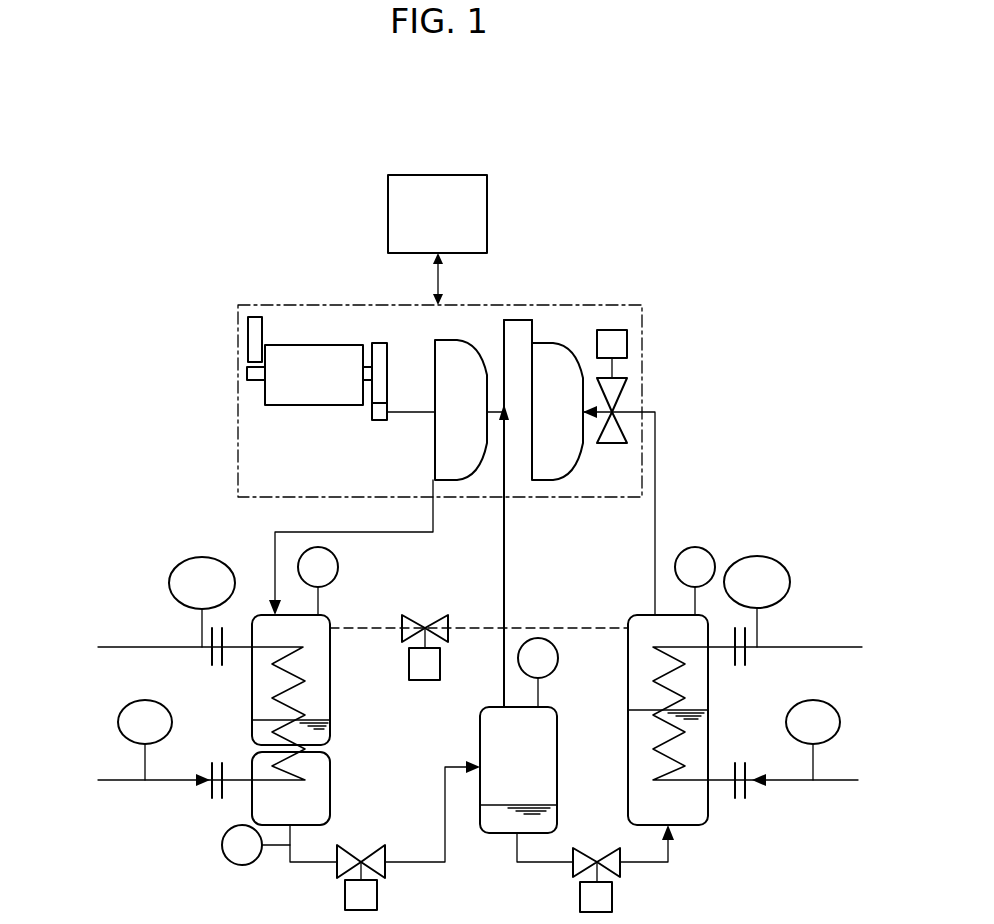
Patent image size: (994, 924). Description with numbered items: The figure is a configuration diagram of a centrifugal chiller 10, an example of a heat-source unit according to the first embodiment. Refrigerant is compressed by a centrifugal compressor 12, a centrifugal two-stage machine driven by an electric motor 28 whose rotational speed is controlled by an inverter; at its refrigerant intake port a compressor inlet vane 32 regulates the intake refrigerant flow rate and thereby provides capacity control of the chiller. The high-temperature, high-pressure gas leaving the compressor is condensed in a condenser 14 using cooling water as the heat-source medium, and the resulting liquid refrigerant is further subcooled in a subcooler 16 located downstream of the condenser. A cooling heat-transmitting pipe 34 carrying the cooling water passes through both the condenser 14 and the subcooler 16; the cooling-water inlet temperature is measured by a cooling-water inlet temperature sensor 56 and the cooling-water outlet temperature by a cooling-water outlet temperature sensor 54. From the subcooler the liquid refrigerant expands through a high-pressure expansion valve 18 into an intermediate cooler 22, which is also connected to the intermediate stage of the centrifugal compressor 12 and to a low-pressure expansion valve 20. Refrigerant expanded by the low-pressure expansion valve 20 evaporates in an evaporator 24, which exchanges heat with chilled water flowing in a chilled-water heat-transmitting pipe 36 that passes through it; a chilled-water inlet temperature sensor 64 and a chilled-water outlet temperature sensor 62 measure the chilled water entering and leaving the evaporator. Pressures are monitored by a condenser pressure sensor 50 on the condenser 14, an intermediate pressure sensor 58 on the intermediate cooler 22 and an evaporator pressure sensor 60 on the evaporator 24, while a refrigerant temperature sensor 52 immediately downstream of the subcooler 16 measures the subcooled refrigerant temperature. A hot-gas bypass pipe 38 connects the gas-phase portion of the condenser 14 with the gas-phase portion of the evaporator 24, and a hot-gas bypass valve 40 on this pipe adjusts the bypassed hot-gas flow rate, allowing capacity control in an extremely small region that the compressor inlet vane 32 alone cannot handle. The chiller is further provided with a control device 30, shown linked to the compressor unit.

The centrifugal chiller 10 is at (188, 182).
The centrifugal compressor 12 is at (668, 302).
The condenser 14 is at (262, 613).
The subcooler 16 is at (331, 780).
The high-pressure expansion valve 18 is at (386, 870).
The low-pressure expansion valve 20 is at (622, 870).
The intermediate cooler 22 is at (558, 755).
The evaporator 24 is at (636, 613).
The electric motor 28 is at (307, 345).
The control device 30 is at (437, 175).
The compressor inlet vane 32 is at (613, 445).
The cooling heat-transmitting pipe 34 is at (305, 700).
The chilled-water heat-transmitting pipe 36 is at (653, 676).
The hot-gas bypass pipe 38 is at (553, 626).
The hot-gas bypass valve 40 is at (432, 622).
The condenser pressure sensor 50 is at (339, 564).
The refrigerant temperature sensor 52 is at (242, 866).
The cooling-water outlet temperature sensor 54 is at (202, 557).
The cooling-water inlet temperature sensor 56 is at (145, 700).
The intermediate pressure sensor 58 is at (558, 653).
The evaporator pressure sensor 60 is at (695, 547).
The chilled-water outlet temperature sensor 62 is at (757, 556).
The chilled-water inlet temperature sensor 64 is at (813, 700).